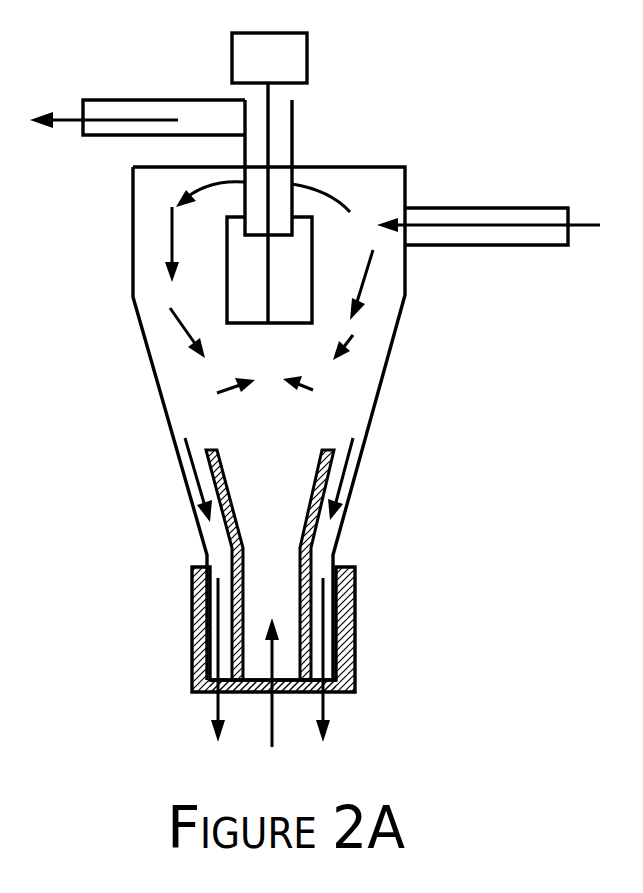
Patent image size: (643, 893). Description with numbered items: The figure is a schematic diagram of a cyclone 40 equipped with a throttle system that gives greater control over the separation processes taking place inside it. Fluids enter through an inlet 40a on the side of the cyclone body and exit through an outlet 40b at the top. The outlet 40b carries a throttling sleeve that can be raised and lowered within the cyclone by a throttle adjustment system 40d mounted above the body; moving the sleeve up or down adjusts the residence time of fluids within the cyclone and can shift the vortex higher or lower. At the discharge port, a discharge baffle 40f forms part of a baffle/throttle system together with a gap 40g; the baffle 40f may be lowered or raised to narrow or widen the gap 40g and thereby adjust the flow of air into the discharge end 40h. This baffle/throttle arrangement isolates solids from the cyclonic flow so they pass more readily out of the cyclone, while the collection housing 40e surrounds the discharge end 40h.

The cyclone 40 is at (410, 140).
The inlet 40a is at (487, 208).
The outlet 40b is at (158, 100).
The throttle adjustment system 40d is at (269, 178).
The collection cup 40e is at (355, 620).
The discharge baffle 40f is at (327, 473).
The gap 40g is at (330, 667).
The discharge end 40h is at (273, 703).